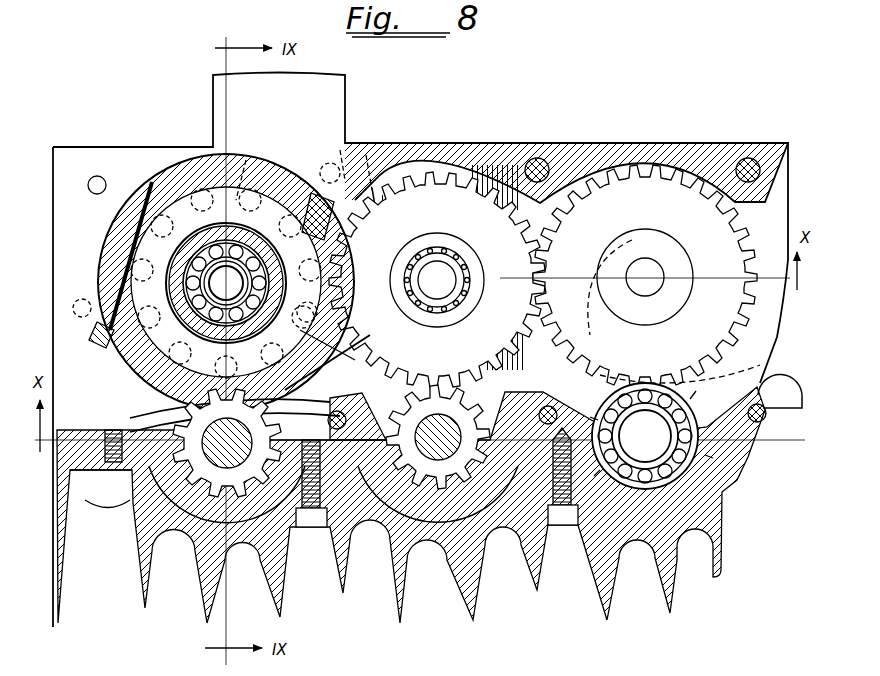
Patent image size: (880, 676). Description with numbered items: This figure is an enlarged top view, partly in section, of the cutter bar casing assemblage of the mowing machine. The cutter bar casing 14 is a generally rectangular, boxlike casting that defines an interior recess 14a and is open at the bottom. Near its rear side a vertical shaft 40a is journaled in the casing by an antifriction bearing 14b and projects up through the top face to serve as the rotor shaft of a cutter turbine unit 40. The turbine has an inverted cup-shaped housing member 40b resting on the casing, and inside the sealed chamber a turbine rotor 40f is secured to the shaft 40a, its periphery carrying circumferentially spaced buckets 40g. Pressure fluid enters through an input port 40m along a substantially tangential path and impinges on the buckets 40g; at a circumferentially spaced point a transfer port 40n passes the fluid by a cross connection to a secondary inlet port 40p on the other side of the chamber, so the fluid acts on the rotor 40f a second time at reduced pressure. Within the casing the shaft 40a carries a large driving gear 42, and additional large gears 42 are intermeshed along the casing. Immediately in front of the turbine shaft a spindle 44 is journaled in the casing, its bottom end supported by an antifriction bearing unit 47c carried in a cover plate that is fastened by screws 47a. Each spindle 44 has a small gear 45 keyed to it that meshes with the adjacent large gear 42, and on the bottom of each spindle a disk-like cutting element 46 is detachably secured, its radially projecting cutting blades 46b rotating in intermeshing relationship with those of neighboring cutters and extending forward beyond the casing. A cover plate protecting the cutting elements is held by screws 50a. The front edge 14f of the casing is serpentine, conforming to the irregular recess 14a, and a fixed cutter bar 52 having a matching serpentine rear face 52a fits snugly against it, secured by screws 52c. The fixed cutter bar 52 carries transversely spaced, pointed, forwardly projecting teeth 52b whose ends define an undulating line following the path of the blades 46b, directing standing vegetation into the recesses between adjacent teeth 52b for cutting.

The cutter bar casing 14 is at (540, 205).
The interior recess 14a is at (548, 215).
The antifriction bearing 14b is at (160, 195).
The front edge 14f is at (628, 560).
The cutter turbine unit 40 is at (277, 244).
The vertical shaft 40a is at (203, 270).
The cup-shaped housing member 40b is at (355, 148).
The turbine rotor 40f is at (372, 160).
The buckets 40g is at (248, 158).
The input port 40m is at (228, 165).
The transfer port 40n is at (130, 345).
The secondary inlet port 40p is at (200, 425).
The large driving gear 42 is at (520, 148).
The spindle 44 is at (483, 497).
The small gear 45 is at (222, 505).
The cutting element 46 is at (706, 568).
The cutting blades 46b is at (605, 272).
The screws 47a is at (368, 140).
The antifriction bearing unit 47c is at (686, 438).
The screws 50a is at (346, 415).
The fixed cutter bar 52 is at (460, 570).
The rear face 52a is at (450, 500).
The teeth 52b is at (122, 577).
The screws 52c is at (122, 505).